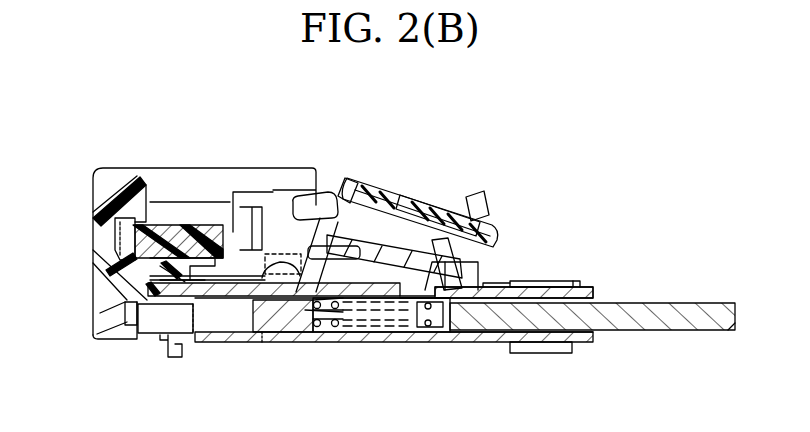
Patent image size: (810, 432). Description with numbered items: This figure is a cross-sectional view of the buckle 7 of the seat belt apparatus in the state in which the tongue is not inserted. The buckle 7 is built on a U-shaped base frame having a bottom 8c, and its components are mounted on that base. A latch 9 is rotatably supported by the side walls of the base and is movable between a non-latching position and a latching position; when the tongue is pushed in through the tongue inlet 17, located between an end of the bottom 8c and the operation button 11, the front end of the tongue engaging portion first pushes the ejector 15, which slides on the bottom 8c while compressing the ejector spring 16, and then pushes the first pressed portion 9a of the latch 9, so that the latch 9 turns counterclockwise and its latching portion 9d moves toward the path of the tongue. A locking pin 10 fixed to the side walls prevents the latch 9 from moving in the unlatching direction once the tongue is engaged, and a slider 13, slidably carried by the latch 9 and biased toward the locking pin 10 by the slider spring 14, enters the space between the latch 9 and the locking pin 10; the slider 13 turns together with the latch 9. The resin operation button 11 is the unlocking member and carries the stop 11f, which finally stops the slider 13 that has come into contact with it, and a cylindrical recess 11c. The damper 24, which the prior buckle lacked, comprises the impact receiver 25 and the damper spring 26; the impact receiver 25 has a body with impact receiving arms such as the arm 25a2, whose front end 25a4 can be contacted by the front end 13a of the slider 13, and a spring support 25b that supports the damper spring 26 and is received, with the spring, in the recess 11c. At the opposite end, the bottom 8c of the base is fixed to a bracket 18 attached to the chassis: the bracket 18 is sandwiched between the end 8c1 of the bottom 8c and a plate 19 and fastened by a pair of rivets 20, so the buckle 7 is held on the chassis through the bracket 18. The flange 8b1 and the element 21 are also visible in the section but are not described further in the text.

The buckle 7 is at (130, 358).
The housing flange 8b1 is at (483, 280).
The bottom 8c is at (230, 343).
The end of the bottom 8c1 is at (566, 342).
The latch 9 is at (318, 252).
The first pressed portion 9a is at (424, 276).
The latching portion 9d is at (237, 300).
The locking pin 10 is at (293, 204).
The operation button 11 is at (103, 195).
The recess 11c is at (117, 238).
The stop 11f is at (274, 250).
The slider 13 is at (445, 196).
The front end of the slider 13a is at (343, 182).
The slider spring 14 is at (402, 186).
The ejector 15 is at (260, 306).
The ejector spring 16 is at (337, 323).
The tongue inlet 17 is at (170, 326).
The bracket 18 is at (685, 330).
The plate 19 is at (557, 281).
The rivets 20 is at (527, 353).
The plate 21 is at (505, 281).
The damper 24 is at (221, 122).
The impact receiver 25 is at (210, 222).
The impact receiving arm 25a2 is at (230, 244).
The front end of the impact receiving arm 25a4 is at (323, 300).
The spring support 25b is at (128, 280).
The damper spring 26 is at (166, 224).